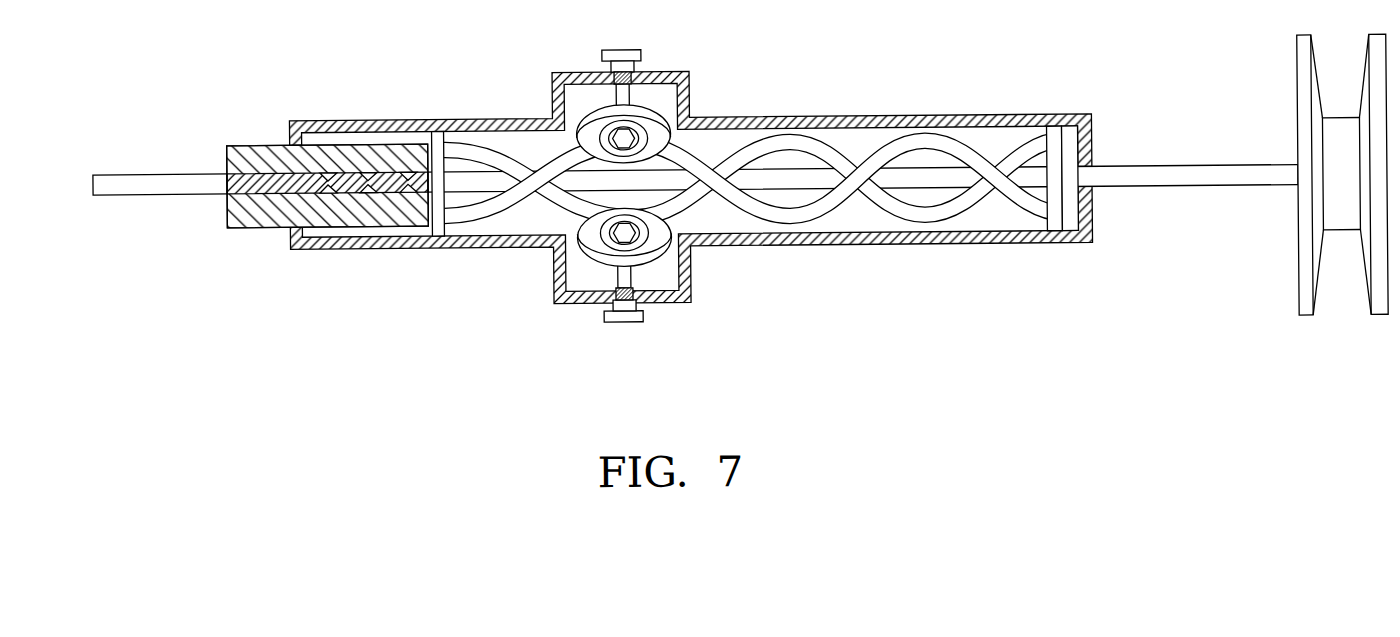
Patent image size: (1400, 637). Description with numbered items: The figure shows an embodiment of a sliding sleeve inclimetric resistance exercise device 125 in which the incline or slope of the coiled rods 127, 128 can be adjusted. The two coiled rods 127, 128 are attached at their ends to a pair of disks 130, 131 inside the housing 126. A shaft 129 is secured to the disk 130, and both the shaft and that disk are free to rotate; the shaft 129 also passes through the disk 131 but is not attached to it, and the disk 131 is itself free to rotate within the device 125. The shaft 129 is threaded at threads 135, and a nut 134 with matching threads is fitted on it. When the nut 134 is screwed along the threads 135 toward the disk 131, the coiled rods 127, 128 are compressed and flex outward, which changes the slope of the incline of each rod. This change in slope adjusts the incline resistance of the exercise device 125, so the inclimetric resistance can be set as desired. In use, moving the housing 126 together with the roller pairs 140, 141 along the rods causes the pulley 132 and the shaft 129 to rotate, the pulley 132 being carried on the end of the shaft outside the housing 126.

The sliding sleeve inclimetric resistance exercise device 125 is at (740, 209).
The housing 126 is at (920, 122).
The coiled rod 127 is at (783, 154).
The coiled rod 128 is at (793, 219).
The shaft 129 is at (933, 185).
The disk 130 is at (1055, 156).
The disk 131 is at (437, 148).
The pulley 132 is at (1307, 254).
The nut 134 is at (252, 156).
The threads 135 is at (345, 185).
The roller pair 140 is at (648, 127).
The roller pair 141 is at (593, 237).